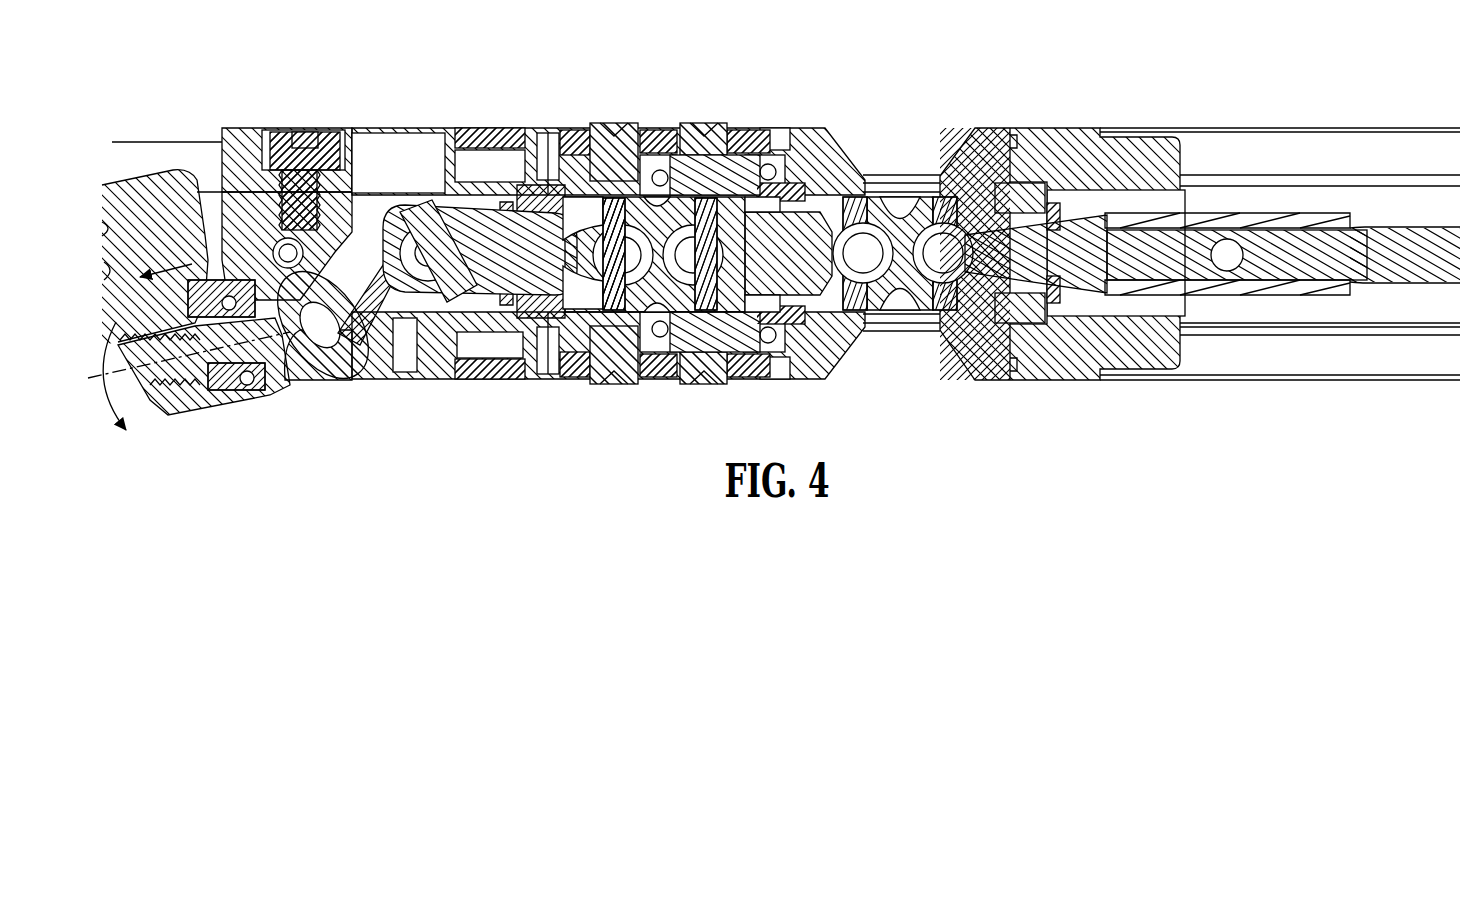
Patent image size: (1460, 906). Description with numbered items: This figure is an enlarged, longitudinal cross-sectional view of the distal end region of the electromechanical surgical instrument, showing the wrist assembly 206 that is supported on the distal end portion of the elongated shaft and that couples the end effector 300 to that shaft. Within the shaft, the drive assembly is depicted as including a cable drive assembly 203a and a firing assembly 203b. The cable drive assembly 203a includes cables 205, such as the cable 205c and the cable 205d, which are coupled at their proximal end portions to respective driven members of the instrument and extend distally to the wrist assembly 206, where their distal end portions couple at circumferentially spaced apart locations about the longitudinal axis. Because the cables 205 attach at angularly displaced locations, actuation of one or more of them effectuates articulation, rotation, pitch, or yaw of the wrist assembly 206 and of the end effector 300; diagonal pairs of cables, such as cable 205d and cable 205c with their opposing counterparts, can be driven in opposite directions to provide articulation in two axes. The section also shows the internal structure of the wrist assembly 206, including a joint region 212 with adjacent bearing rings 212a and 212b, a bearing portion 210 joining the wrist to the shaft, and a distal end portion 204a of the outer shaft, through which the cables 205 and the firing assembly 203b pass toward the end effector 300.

The end effector 300 is at (137, 168).
The wrist assembly 206 is at (523, 108).
The articulation joint 212 is at (651, 88).
The joint bearing ring 212a is at (696, 137).
The joint bearing ring 212b is at (612, 135).
The bearing assembly 210 is at (912, 130).
The cable drive assembly 203a is at (927, 334).
The firing assembly 203b is at (1408, 285).
The outer tube distal end 204a is at (1202, 385).
The cables 205 is at (1408, 340).
The cable 205c is at (1425, 177).
The cable 205d is at (1420, 330).